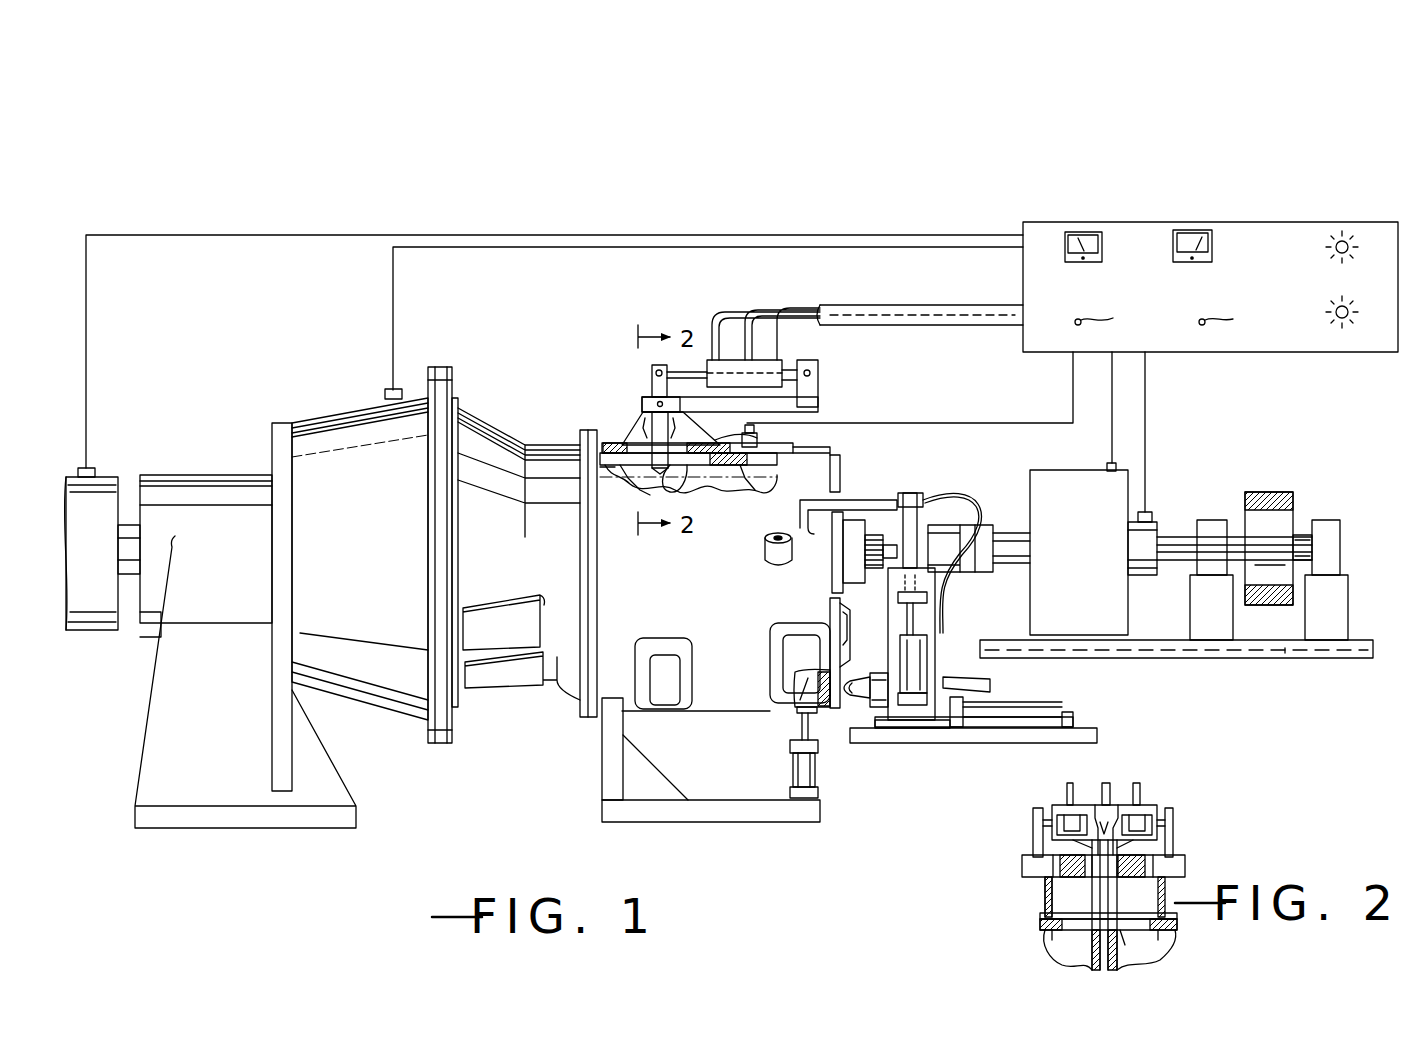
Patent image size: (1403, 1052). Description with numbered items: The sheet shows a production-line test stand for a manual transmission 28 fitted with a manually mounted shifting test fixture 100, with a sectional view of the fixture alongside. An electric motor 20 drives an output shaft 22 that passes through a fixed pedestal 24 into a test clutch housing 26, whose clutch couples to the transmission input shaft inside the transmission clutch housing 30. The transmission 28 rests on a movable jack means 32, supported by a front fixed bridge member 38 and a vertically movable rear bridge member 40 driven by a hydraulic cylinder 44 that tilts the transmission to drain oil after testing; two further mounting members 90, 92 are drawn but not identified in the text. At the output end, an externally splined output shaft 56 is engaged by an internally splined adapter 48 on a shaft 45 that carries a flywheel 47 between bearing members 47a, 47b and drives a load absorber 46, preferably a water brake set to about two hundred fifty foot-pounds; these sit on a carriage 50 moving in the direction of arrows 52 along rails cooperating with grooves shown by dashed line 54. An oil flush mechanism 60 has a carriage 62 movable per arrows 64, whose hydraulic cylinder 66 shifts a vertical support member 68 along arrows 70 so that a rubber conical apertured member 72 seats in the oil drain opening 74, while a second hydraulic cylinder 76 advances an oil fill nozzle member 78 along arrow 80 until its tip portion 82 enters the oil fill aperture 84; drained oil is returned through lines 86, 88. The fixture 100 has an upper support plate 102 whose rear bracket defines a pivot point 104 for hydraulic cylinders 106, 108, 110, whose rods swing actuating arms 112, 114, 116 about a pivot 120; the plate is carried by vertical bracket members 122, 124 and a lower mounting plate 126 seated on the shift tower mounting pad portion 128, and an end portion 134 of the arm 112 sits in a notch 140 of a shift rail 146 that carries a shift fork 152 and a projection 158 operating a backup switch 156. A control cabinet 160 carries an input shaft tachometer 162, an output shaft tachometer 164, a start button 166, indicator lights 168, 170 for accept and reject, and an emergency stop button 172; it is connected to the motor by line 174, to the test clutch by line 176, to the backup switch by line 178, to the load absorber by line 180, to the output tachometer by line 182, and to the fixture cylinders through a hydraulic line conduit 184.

In FIG. 1, the electric motor 20 is at (102, 492).
In FIG. 1, the output shaft 22 is at (127, 578).
In FIG. 1, the fixed pedestal 24 is at (243, 598).
In FIG. 1, the test clutch housing 26 is at (377, 547).
In FIG. 1, the transmission 28 is at (727, 592).
In FIG. 1, the transmission clutch housing 30 is at (545, 573).
In FIG. 1, the movable jack means 32 is at (598, 782).
In FIG. 1, the front fixed bridge member 38 is at (607, 738).
In FIG. 1, the rear bridge member 40 is at (795, 713).
In FIG. 1, the hydraulic cylinder 44 is at (790, 782).
In FIG. 1, the shaft 45 is at (1012, 545).
In FIG. 1, the load absorber 46 is at (1093, 570).
In FIG. 1, the flywheel 47 is at (1265, 510).
In FIG. 1, the bearing member 47a is at (1210, 520).
In FIG. 1, the bearing member 47b is at (1330, 535).
In FIG. 1, the internally splined adapter 48 is at (975, 525).
In FIG. 1, the carriage 50 is at (1150, 658).
In FIG. 1, the arrows 52 is at (1227, 685).
In FIG. 1, the dashed line 54 is at (1285, 658).
In FIG. 1, the output shaft 56 is at (841, 590).
In FIG. 1, the oil flush mechanism 60 is at (893, 755).
In FIG. 1, the carriage 62 is at (937, 743).
In FIG. 1, the arrows 64 is at (1090, 755).
In FIG. 1, the hydraulic cylinder 66 is at (1000, 700).
In FIG. 1, the vertical support member 68 is at (930, 650).
In FIG. 1, the arrows 70 is at (1010, 678).
In FIG. 1, the rubber conical apertured member 72 is at (850, 700).
In FIG. 1, the oil drain opening 74 is at (797, 685).
In FIG. 1, the second hydraulic cylinder 76 is at (900, 665).
In FIG. 1, the oil fill nozzle member 78 is at (897, 500).
In FIG. 1, the arrow 80 is at (888, 483).
In FIG. 1, the tip portion 82 is at (808, 528).
In FIG. 1, the oil fill aperture 84 is at (765, 540).
In FIG. 1, the line 86 is at (962, 680).
In FIG. 1, the line 88 is at (948, 615).
In FIG. 1, the bracket 90 is at (665, 660).
In FIG. 1, the bracket 92 is at (802, 650).
In FIG. 1, the shifting test fixture 100 is at (635, 372).
In FIG. 2, the shifting test fixture 100 is at (1010, 836).
In FIG. 1, the upper support plate 102 is at (818, 408).
In FIG. 2, the upper support plate 102 is at (1170, 868).
In FIG. 1, the pivot point 104 is at (818, 375).
In FIG. 2, the pivot point 104 is at (1152, 832).
In FIG. 1, the hydraulic cylinder 106 is at (745, 360).
In FIG. 2, the hydraulic cylinder 106 is at (1138, 805).
In FIG. 2, the hydraulic cylinder 108 is at (1113, 805).
In FIG. 2, the hydraulic cylinder 110 is at (1052, 798).
In FIG. 1, the actuating arm 112 is at (652, 390).
In FIG. 2, the actuating arm 112 is at (1145, 847).
In FIG. 2, the actuating arm 114 is at (1110, 895).
In FIG. 2, the actuating arm 116 is at (1050, 858).
In FIG. 1, the pivot 120 is at (652, 405).
In FIG. 2, the pivot 120 is at (1048, 914).
In FIG. 1, the vertical bracket member 122 is at (628, 440).
In FIG. 2, the vertical bracket member 122 is at (1170, 930).
In FIG. 2, the vertical bracket member 124 is at (1048, 880).
In FIG. 1, the lower mounting plate 126 is at (757, 440).
In FIG. 2, the lower mounting plate 126 is at (1050, 932).
In FIG. 1, the shift tower mounting pad portion 128 is at (715, 478).
In FIG. 2, the shift tower mounting pad portion 128 is at (1085, 930).
In FIG. 1, the end portion 134 is at (628, 480).
In FIG. 2, the end portion 134 is at (1135, 945).
In FIG. 1, the notch 140 is at (670, 488).
In FIG. 1, the shift rail 146 is at (750, 478).
In FIG. 2, the shift rail 146 is at (1130, 962).
In FIG. 1, the shift fork 152 is at (600, 480).
In FIG. 1, the backup switch 156 is at (757, 450).
In FIG. 1, the projection 158 is at (845, 490).
In FIG. 1, the control cabinet 160 is at (1285, 358).
In FIG. 1, the input shaft tachometer 162 is at (1083, 232).
In FIG. 1, the output shaft tachometer 164 is at (1190, 230).
In FIG. 1, the start button 166 is at (1116, 322).
In FIG. 1, the indicator light 168 is at (1334, 245).
In FIG. 1, the indicator light 170 is at (1326, 311).
In FIG. 1, the emergency stop button 172 is at (1240, 322).
In FIG. 1, the line 174 is at (215, 238).
In FIG. 1, the line 176 is at (524, 243).
In FIG. 1, the line 178 is at (962, 416).
In FIG. 1, the line 180 is at (1110, 440).
In FIG. 1, the line 182 is at (1160, 468).
In FIG. 1, the hydraulic line conduit 184 is at (888, 262).